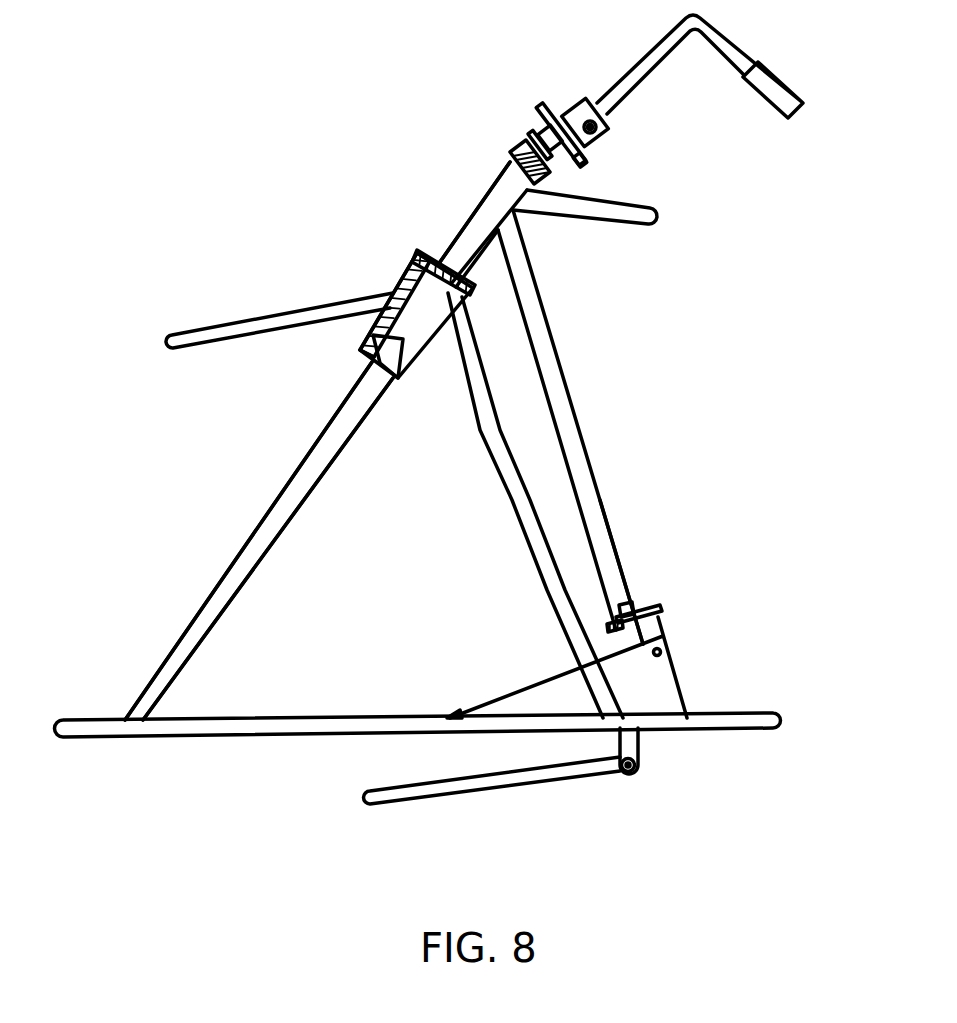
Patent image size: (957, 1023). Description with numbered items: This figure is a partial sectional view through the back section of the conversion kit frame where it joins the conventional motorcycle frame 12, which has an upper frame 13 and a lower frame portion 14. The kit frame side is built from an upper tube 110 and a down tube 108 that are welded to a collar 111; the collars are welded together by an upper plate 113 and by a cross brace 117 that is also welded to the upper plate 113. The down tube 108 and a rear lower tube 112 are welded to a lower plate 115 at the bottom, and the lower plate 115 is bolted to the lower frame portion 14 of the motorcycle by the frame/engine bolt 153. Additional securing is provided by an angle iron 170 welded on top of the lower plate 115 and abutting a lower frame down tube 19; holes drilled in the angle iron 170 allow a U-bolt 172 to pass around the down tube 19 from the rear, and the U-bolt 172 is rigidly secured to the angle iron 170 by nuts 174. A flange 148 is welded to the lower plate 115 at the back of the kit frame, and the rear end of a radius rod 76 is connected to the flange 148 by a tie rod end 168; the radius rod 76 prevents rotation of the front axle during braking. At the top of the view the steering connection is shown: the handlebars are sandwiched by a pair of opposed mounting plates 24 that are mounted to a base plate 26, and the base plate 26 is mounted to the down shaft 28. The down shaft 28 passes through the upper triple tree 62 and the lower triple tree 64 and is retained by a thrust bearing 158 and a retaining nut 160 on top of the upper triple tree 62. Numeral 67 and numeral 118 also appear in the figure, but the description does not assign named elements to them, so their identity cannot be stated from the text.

The frame 12 is at (636, 434).
The upper frame 13 is at (571, 218).
The lower frame portion 14 is at (562, 378).
The lower frame down tube 19 is at (640, 586).
The mounting plate 24 is at (600, 148).
The base plate 26 is at (582, 165).
The down shaft 28 is at (322, 457).
The upper triple tree 62 is at (505, 163).
The lower triple tree 64 is at (462, 290).
The tube section 67 is at (472, 213).
The radius rod 76 is at (515, 795).
The down tube 108 is at (512, 503).
The upper tube 110 is at (267, 322).
The collar 111 is at (435, 298).
The rear lower tube 112 is at (333, 716).
The upper plate 113 is at (373, 332).
The lower plate 115 is at (665, 692).
The cross brace 117 is at (398, 377).
The leg tube 118 is at (228, 605).
The flange 148 is at (638, 750).
The frame/engine bolt 153 is at (661, 651).
The thrust bearing 158 is at (528, 140).
The retaining nut 160 is at (530, 128).
The tie rod end 168 is at (632, 772).
The angle iron 170 is at (606, 628).
The U-bolt 172 is at (662, 606).
The nut 174 is at (615, 607).